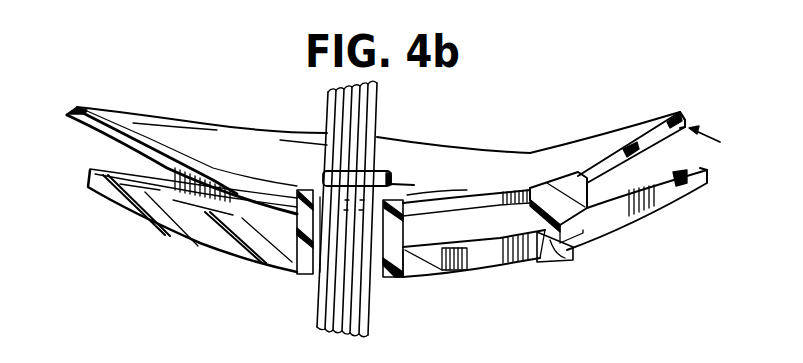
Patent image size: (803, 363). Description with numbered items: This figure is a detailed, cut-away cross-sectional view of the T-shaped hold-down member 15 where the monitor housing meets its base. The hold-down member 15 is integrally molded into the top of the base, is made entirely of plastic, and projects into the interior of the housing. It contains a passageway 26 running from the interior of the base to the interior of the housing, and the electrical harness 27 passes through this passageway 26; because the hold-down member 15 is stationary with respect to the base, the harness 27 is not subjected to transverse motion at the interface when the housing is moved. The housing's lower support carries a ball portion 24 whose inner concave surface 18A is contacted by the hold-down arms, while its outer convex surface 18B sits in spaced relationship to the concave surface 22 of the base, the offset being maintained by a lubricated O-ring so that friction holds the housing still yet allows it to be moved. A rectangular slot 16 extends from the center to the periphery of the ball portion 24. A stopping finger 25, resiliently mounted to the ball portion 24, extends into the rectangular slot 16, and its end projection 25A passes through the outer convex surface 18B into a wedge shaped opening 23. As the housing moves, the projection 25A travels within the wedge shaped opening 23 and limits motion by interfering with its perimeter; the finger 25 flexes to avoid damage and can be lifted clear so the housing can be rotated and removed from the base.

The hold-down member 15 is at (405, 203).
The rectangular slot 16 is at (507, 188).
The inner concave surface 18A is at (640, 130).
The outer convex surface 18B is at (667, 132).
The concave surface 22 is at (107, 170).
The wedge shaped opening 23 is at (627, 203).
The ball portion 24 is at (748, 157).
The stopping finger 25 is at (567, 188).
The projection 25A is at (550, 252).
The passageway 26 is at (320, 272).
The electrical harness 27 is at (357, 125).